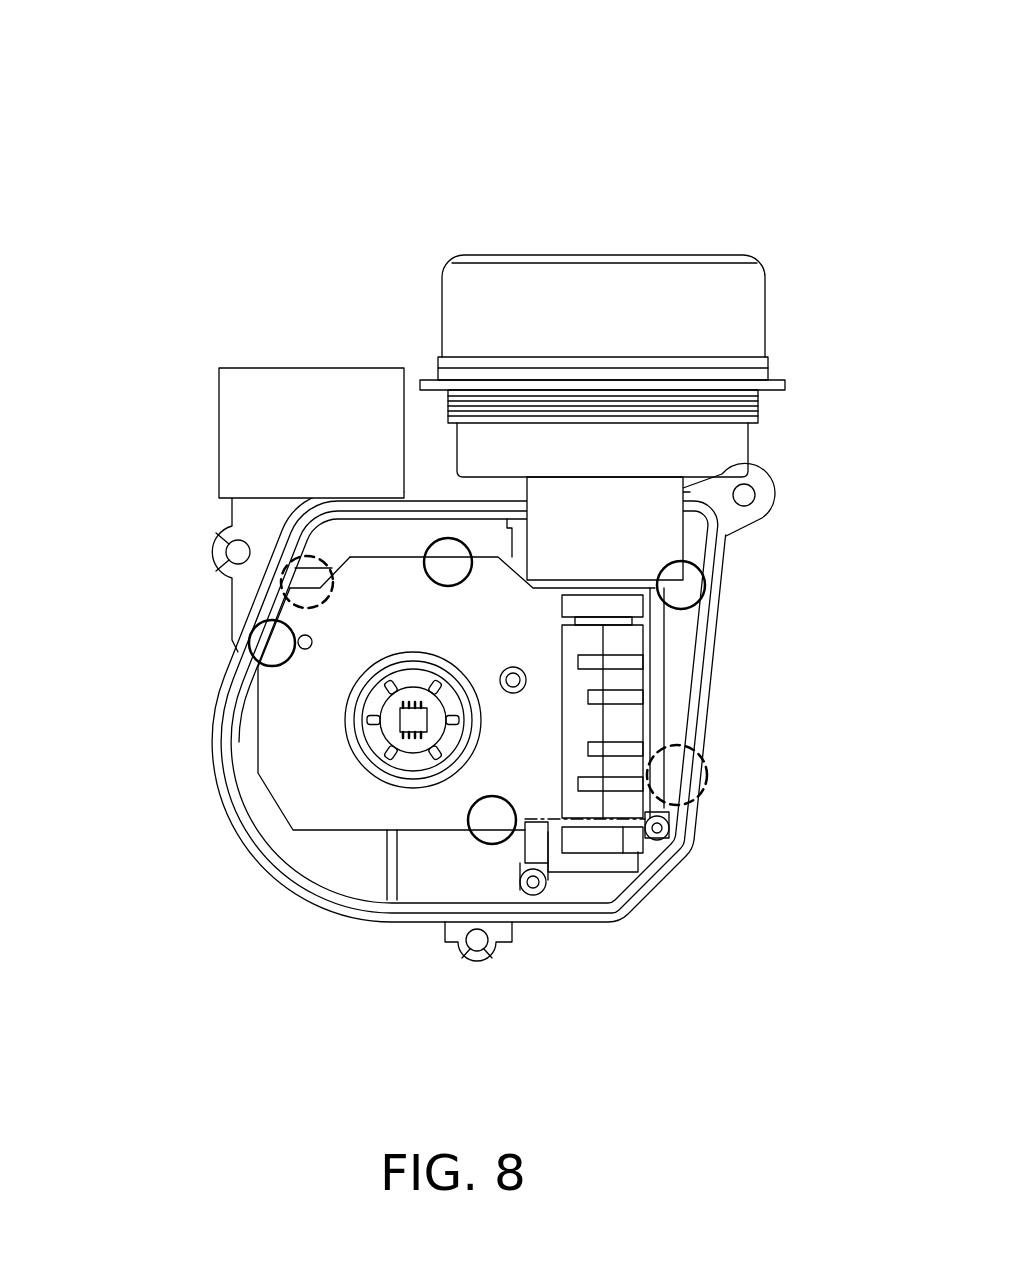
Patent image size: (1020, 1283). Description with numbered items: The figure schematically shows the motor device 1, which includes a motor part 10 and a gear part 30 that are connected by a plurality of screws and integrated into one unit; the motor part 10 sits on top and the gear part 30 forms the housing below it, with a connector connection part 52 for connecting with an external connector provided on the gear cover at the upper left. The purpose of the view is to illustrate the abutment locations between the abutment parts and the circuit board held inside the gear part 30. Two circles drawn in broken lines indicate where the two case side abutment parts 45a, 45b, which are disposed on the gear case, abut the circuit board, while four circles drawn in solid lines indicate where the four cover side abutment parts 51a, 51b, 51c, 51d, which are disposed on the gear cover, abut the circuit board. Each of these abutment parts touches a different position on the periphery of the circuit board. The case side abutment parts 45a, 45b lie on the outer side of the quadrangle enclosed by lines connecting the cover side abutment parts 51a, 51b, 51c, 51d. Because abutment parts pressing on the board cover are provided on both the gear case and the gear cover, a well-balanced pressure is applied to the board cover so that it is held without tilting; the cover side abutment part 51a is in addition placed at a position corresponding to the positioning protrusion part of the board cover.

The motor device 1 is at (182, 180).
The motor part 10 is at (777, 224).
The gear part 30 is at (270, 893).
The connector connection part 52 is at (257, 368).
The cover side abutment part 51a is at (688, 590).
The cover side abutment part 51b is at (483, 843).
The cover side abutment part 51c is at (262, 658).
The cover side abutment part 51d is at (448, 562).
The case side abutment part 45a is at (282, 597).
The case side abutment part 45b is at (708, 772).